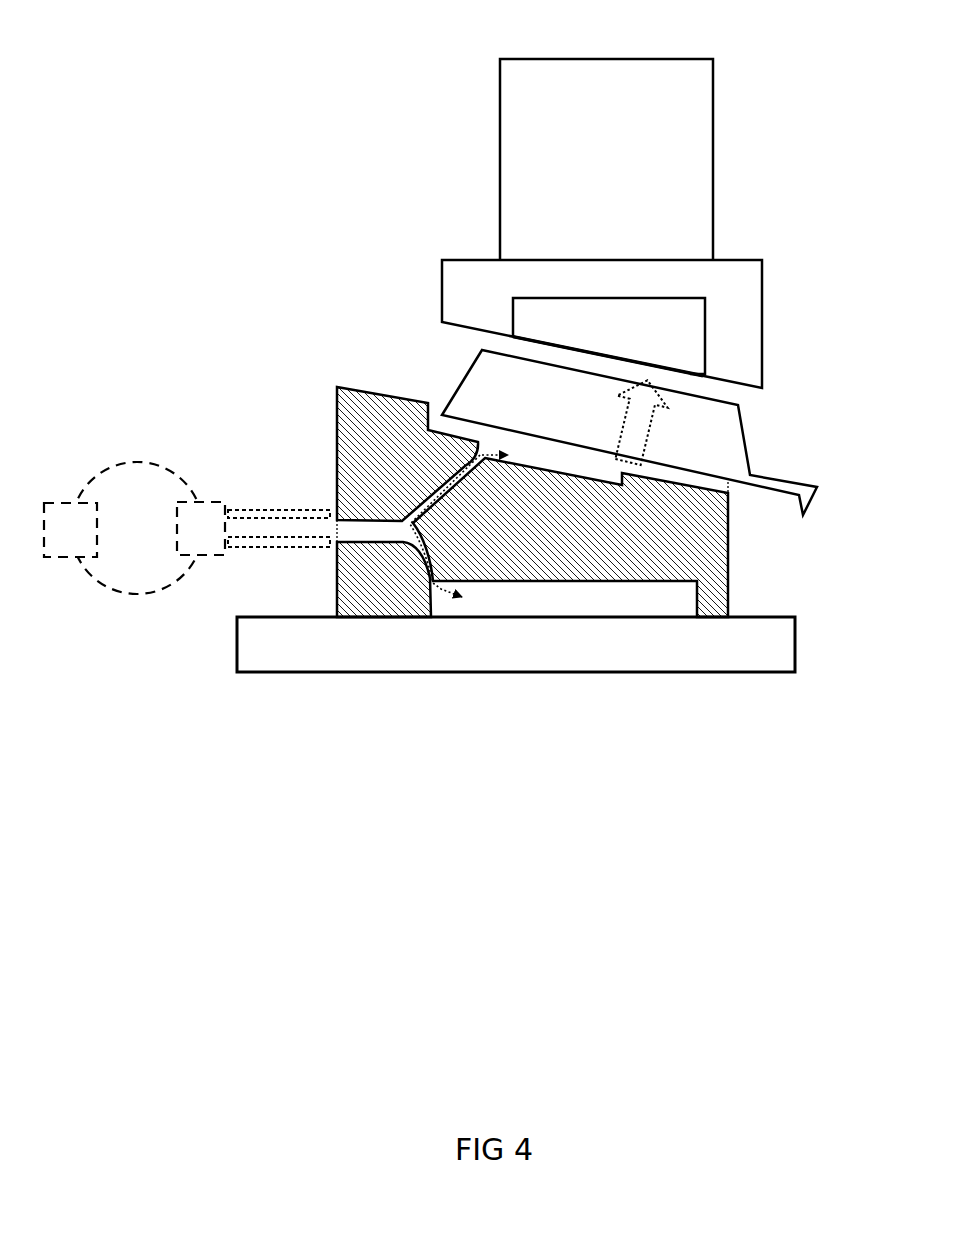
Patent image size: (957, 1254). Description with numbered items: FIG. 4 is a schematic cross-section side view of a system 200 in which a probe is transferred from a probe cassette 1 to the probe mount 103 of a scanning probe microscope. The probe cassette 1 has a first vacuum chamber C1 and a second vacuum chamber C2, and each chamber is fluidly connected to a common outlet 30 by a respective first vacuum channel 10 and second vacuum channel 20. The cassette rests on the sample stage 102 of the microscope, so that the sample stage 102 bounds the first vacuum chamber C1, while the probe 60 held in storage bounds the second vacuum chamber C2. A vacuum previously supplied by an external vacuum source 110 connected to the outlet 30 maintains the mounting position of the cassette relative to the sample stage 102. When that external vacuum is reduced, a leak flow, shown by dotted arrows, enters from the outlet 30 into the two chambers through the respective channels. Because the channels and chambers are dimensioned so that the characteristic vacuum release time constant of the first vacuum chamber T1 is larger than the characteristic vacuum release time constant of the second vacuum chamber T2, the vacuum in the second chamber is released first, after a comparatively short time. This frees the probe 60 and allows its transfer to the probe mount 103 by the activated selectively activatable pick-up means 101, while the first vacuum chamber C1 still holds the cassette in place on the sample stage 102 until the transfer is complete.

The system 200 is at (156, 96).
The probe cassette 1 is at (264, 397).
The first vacuum channel 10 is at (420, 484).
The second vacuum channel 20 is at (410, 566).
The outlet 30 is at (345, 520).
The probe 60 is at (751, 430).
The selectively activatable pick-up means 101 is at (546, 320).
The sample stage 102 is at (516, 644).
The probe mount 103 is at (767, 318).
The external vacuum source 110 is at (187, 528).
The characteristic vacuum release time constant of the first vacuum chamber T1 is at (441, 565).
The characteristic vacuum release time constant of the second vacuum chamber T2 is at (454, 479).
The first vacuum chamber C1 is at (660, 604).
The second vacuum chamber C2 is at (552, 460).